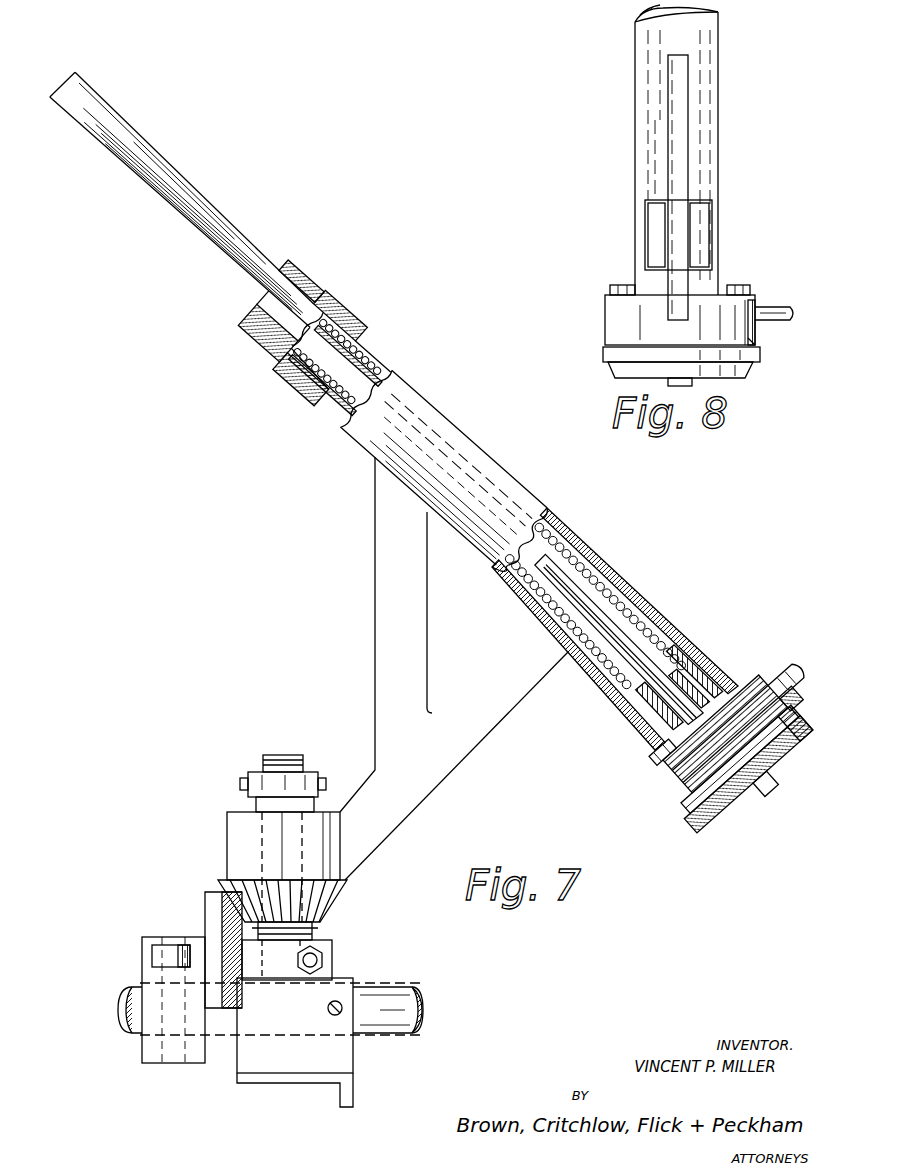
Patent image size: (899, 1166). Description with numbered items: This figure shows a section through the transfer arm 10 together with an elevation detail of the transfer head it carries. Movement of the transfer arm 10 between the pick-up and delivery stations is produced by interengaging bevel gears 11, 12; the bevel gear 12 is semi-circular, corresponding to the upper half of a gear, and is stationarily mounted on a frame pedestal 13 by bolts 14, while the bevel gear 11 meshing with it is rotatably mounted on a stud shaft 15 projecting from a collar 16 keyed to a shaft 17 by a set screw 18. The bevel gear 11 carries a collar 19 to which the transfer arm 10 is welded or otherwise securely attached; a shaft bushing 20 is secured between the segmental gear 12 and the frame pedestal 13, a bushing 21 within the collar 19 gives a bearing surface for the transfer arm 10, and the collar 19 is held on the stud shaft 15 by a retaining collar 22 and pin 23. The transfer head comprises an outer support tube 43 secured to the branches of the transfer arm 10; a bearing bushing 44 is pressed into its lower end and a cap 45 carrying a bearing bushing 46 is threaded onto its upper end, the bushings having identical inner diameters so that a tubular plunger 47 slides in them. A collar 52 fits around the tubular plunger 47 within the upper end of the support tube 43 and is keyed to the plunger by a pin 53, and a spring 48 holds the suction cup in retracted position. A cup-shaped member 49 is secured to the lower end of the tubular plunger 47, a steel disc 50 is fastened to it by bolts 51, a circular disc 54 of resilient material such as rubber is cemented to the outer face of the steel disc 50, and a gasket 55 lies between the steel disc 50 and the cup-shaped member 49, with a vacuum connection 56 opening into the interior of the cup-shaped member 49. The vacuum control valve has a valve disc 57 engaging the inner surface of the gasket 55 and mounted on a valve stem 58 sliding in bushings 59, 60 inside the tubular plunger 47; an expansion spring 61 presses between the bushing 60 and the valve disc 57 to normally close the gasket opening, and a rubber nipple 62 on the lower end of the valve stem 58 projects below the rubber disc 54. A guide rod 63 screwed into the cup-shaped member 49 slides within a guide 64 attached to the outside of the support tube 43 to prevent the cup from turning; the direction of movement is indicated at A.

In FIG. 7, the transfer arm 10 is at (375, 655).
In FIG. 7, the direction arrow A is at (358, 515).
In FIG. 7, the bevel gear 11 is at (340, 910).
In FIG. 7, the bevel gear 12 is at (222, 927).
In FIG. 7, the frame pedestal 13 is at (290, 1088).
In FIG. 7, the bolts 14 is at (152, 955).
In FIG. 7, the stud shaft 15 is at (288, 960).
In FIG. 7, the collar 16 is at (340, 1065).
In FIG. 7, the shaft 17 is at (400, 990).
In FIG. 7, the set screw 18 is at (340, 1003).
In FIG. 7, the collar 19 is at (227, 838).
In FIG. 7, the shaft bushing 20 is at (150, 974).
In FIG. 7, the bushing 21 is at (260, 858).
In FIG. 7, the retaining collar 22 is at (250, 787).
In FIG. 7, the pin 23 is at (252, 776).
In FIG. 7, the outer support tube 43 is at (505, 477).
In FIG. 8, the outer support tube 43 is at (722, 113).
In FIG. 7, the bearing bushing 44 is at (690, 655).
In FIG. 7, the cap 45 is at (332, 296).
In FIG. 7, the bearing bushing 46 is at (312, 281).
In FIG. 7, the tubular plunger 47 is at (586, 560).
In FIG. 7, the spring 48 is at (555, 524).
In FIG. 7, the cup-shaped member 49 is at (678, 800).
In FIG. 8, the cup-shaped member 49 is at (605, 318).
In FIG. 7, the steel disc 50 is at (698, 832).
In FIG. 8, the steel disc 50 is at (603, 355).
In FIG. 7, the bolts 51 is at (652, 764).
In FIG. 8, the bolts 51 is at (740, 288).
In FIG. 7, the collar 52 is at (355, 318).
In FIG. 7, the pin 53 is at (370, 350).
In FIG. 7, the circular disc 54 is at (712, 835).
In FIG. 8, the circular disc 54 is at (755, 372).
In FIG. 7, the gasket 55 is at (800, 718).
In FIG. 8, the gasket 55 is at (758, 340).
In FIG. 7, the vacuum connection 56 is at (790, 663).
In FIG. 8, the vacuum connection 56 is at (785, 305).
In FIG. 7, the valve disc 57 is at (790, 700).
In FIG. 7, the valve stem 58 is at (632, 614).
In FIG. 7, the bushing 59 is at (612, 590).
In FIG. 7, the bushing 60 is at (703, 672).
In FIG. 7, the expansion spring 61 is at (720, 690).
In FIG. 7, the rubber nipple 62 is at (760, 790).
In FIG. 8, the rubber nipple 62 is at (673, 382).
In FIG. 8, the guide rod 63 is at (688, 172).
In FIG. 8, the guide 64 is at (705, 233).